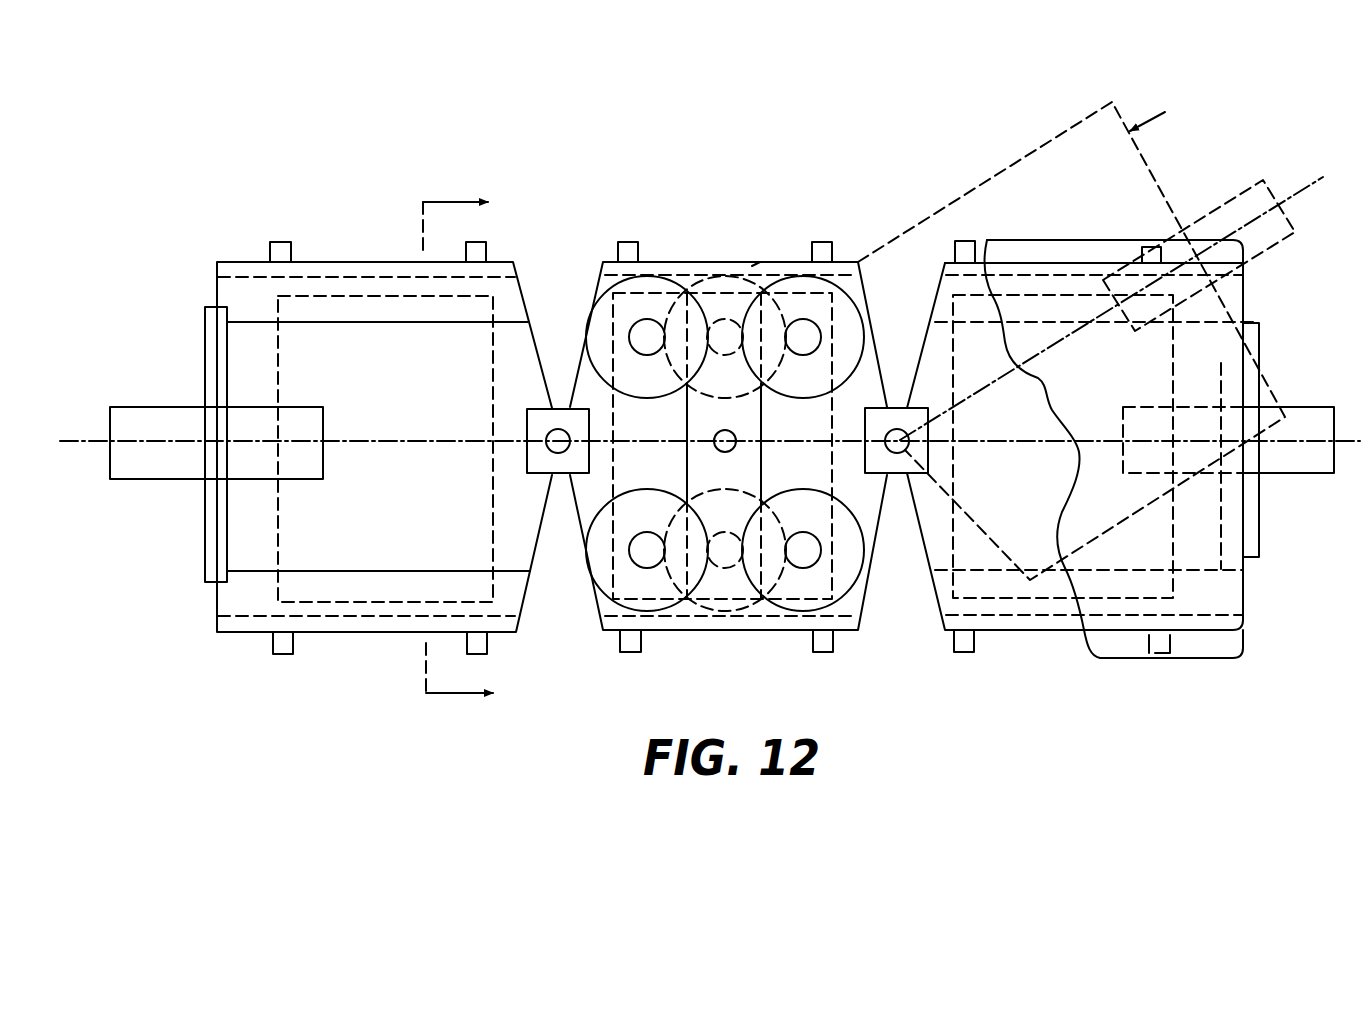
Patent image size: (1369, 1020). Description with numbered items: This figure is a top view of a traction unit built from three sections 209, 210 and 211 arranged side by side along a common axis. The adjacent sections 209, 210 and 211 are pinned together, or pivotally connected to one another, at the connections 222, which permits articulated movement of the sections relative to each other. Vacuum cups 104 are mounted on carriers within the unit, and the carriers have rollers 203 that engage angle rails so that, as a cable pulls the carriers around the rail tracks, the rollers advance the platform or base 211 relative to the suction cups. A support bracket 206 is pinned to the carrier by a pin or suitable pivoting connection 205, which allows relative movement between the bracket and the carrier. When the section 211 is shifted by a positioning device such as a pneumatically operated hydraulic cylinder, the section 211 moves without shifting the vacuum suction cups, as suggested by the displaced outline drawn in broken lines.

The vacuum cups 104 is at (690, 273).
The rollers 203 is at (610, 262).
The pin or pivoting connection 205 is at (714, 436).
The support bracket 206 is at (763, 456).
The section 209 is at (350, 262).
The section 210 is at (756, 264).
The platform or base section 211 is at (985, 180).
The pivotal connection 222 is at (556, 453).